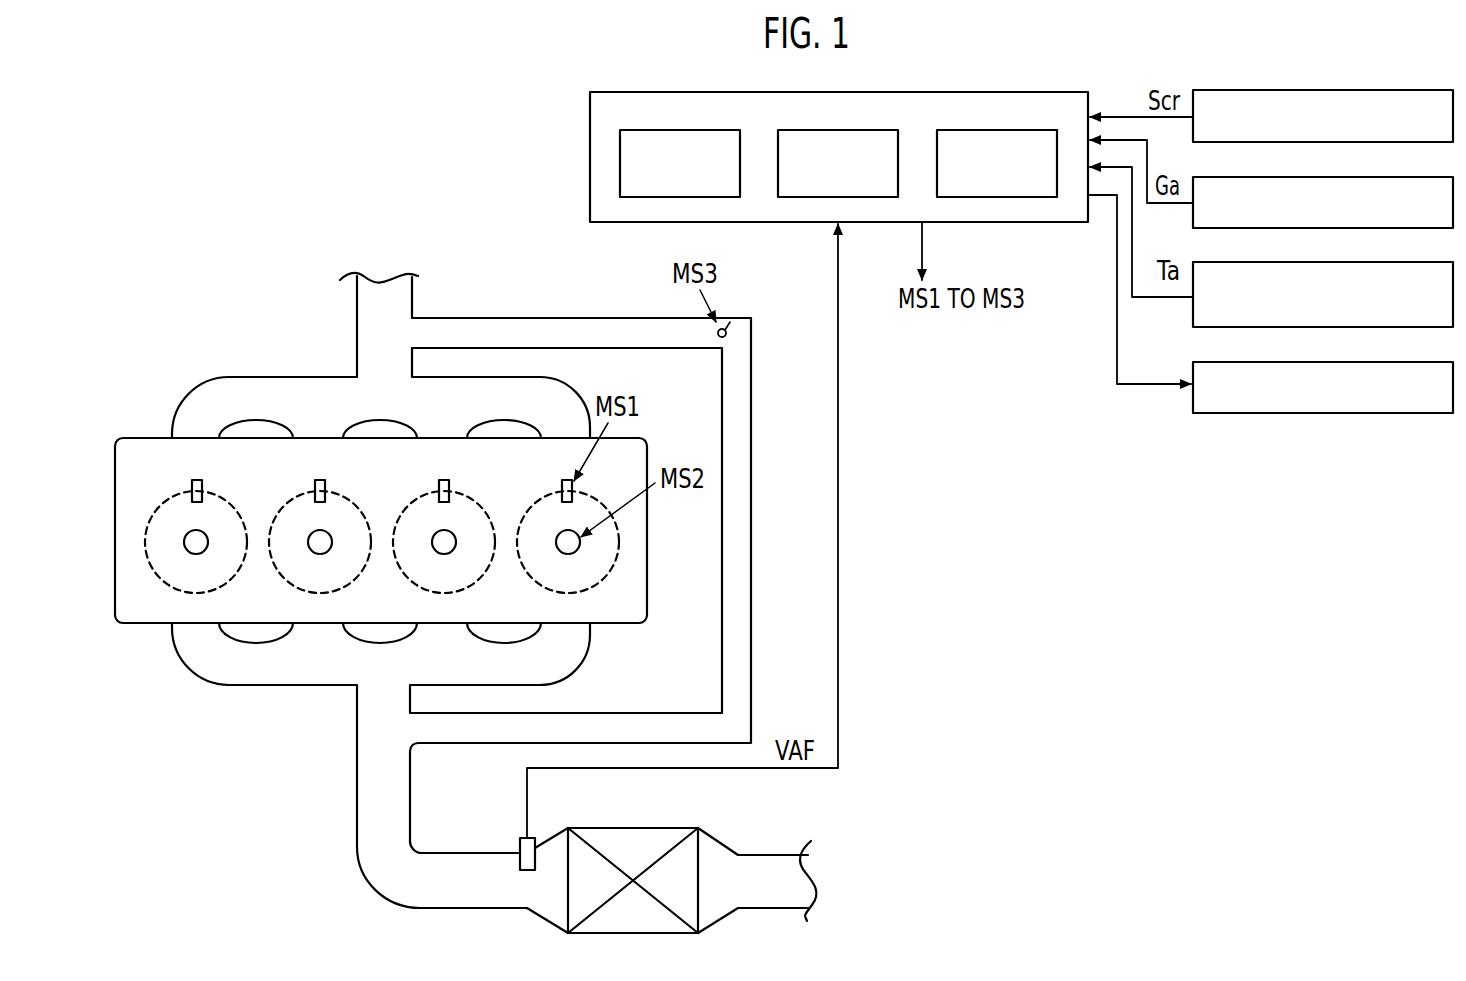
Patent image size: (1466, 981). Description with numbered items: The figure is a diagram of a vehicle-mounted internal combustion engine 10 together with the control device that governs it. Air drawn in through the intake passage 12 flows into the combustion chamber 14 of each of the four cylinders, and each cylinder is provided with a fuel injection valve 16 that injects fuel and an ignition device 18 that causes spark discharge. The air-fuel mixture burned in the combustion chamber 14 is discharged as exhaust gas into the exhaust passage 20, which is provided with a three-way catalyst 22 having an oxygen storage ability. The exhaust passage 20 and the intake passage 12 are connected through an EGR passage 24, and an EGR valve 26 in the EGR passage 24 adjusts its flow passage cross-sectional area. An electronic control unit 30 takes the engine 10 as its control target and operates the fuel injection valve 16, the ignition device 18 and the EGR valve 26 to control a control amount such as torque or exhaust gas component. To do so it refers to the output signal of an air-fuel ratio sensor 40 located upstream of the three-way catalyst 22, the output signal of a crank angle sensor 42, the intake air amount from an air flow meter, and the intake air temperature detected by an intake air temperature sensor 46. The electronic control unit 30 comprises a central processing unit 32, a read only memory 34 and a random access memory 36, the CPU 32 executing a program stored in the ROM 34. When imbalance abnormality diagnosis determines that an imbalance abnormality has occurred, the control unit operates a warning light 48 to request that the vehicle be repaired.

The internal combustion engine 10 is at (318, 312).
The intake passage 12 is at (404, 303).
The combustion chamber 14 is at (163, 520).
The fuel injection valve 16 is at (197, 480).
The ignition device 18 is at (209, 540).
The exhaust passage 20 is at (592, 636).
The three-way catalyst 22 is at (634, 833).
The EGR passage 24 is at (745, 468).
The EGR valve 26 is at (733, 330).
The electronic control unit 30 is at (839, 143).
The central processing unit (CPU) 32 is at (668, 124).
The read only memory (ROM) 34 is at (828, 124).
The random access memory (RAM) 36 is at (988, 124).
The air-fuel ratio sensor 40 is at (522, 838).
The crank angle sensor 42 is at (1388, 175).
The intake air temperature sensor 46 is at (1388, 260).
The warning light 48 is at (1388, 360).